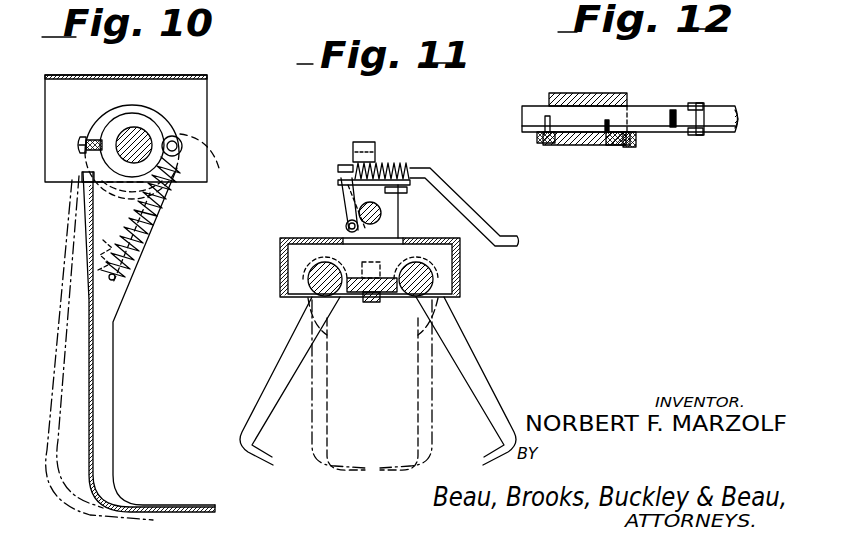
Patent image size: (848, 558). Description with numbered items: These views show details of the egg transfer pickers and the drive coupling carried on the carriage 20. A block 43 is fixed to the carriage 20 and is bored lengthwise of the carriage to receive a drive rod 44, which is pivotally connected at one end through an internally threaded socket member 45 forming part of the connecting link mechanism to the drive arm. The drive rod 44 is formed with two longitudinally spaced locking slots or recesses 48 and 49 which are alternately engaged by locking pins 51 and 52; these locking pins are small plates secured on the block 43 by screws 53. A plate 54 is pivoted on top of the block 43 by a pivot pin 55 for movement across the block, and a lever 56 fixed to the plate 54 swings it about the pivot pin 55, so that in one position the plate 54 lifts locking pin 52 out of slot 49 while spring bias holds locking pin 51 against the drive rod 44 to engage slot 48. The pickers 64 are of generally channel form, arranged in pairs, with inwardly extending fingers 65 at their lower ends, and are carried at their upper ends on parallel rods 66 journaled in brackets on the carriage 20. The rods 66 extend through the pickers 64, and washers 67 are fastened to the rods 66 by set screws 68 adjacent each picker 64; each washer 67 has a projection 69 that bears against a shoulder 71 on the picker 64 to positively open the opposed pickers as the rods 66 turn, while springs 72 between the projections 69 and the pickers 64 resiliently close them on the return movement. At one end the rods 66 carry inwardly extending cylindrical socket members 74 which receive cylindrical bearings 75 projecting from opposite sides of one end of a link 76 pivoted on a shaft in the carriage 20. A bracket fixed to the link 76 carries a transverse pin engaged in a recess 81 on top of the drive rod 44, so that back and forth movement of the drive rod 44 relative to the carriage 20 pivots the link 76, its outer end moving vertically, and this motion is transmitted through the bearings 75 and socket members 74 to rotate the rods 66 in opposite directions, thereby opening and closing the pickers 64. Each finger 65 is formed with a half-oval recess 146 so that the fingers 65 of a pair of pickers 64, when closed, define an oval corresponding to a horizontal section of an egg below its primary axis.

In FIG. 10, the carriage 20 is at (190, 76).
In FIG. 11, the block 43 is at (400, 219).
In FIG. 12, the block 43 is at (588, 92).
In FIG. 11, the drive rod 44 is at (377, 219).
In FIG. 12, the drive rod 44 is at (647, 108).
In FIG. 12, the socket member 45 is at (728, 108).
In FIG. 12, the locking slot 48 is at (547, 117).
In FIG. 12, the locking slot 49 is at (606, 147).
In FIG. 12, the locking pin 51 is at (558, 147).
In FIG. 11, the locking pin 52 is at (340, 187).
In FIG. 12, the locking pin 52 is at (630, 148).
In FIG. 11, the screws 53 is at (346, 229).
In FIG. 12, the screws 53 is at (540, 142).
In FIG. 11, the plate 54 is at (392, 190).
In FIG. 11, the pivot pin 55 is at (367, 142).
In FIG. 11, the lever 56 is at (468, 203).
In FIG. 10, the pickers 64 is at (95, 368).
In FIG. 11, the pickers 64 is at (278, 351).
In FIG. 10, the fingers 65 is at (140, 507).
In FIG. 10, the rods 66 is at (143, 140).
In FIG. 11, the rods 66 is at (310, 277).
In FIG. 10, the washers 67 is at (140, 100).
In FIG. 10, the set screws 68 is at (80, 138).
In FIG. 10, the projection 69 is at (182, 143).
In FIG. 10, the shoulder 71 is at (214, 168).
In FIG. 10, the springs 72 is at (131, 205).
In FIG. 11, the socket members 74 is at (345, 325).
In FIG. 11, the bearings 75 is at (353, 296).
In FIG. 11, the link 76 is at (372, 275).
In FIG. 12, the recess 81 is at (676, 128).
In FIG. 10, the recess 146 is at (177, 507).